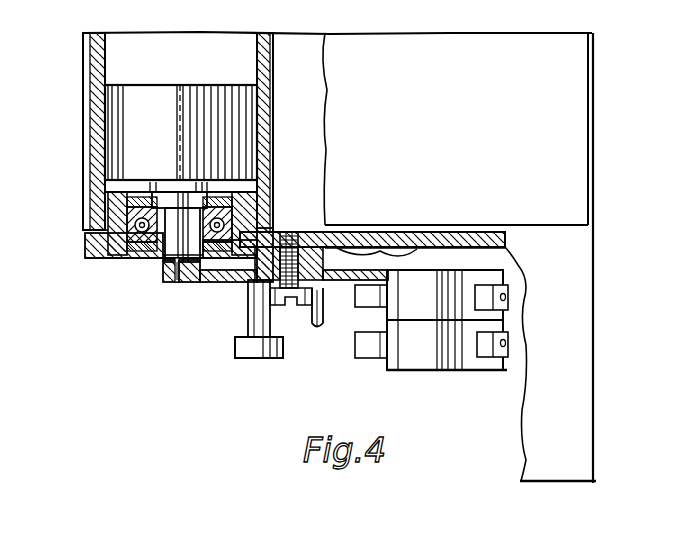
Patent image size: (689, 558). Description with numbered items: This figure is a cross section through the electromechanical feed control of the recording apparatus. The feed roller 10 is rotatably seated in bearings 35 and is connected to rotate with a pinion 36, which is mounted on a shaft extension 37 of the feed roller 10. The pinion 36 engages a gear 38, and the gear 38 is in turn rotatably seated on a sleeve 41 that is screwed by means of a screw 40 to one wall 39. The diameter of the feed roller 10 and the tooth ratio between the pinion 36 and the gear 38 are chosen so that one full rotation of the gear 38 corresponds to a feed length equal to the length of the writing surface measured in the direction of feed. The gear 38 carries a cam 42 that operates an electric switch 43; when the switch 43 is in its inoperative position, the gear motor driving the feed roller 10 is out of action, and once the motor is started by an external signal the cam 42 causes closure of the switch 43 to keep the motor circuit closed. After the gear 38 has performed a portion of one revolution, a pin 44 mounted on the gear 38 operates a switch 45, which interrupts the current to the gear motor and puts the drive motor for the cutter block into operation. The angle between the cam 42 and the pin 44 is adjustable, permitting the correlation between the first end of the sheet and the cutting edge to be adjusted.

The feed roller 10 is at (92, 150).
The bearings 35 is at (85, 241).
The pinion 36 is at (162, 272).
The shaft extension 37 is at (181, 283).
The gear 38 is at (222, 282).
The wall 39 is at (305, 232).
The screw 40 is at (291, 305).
The sleeve 41 is at (333, 238).
The cam 42 is at (251, 345).
The electric switch 43 is at (500, 365).
The pin 44 is at (330, 325).
The switch 45 is at (500, 273).